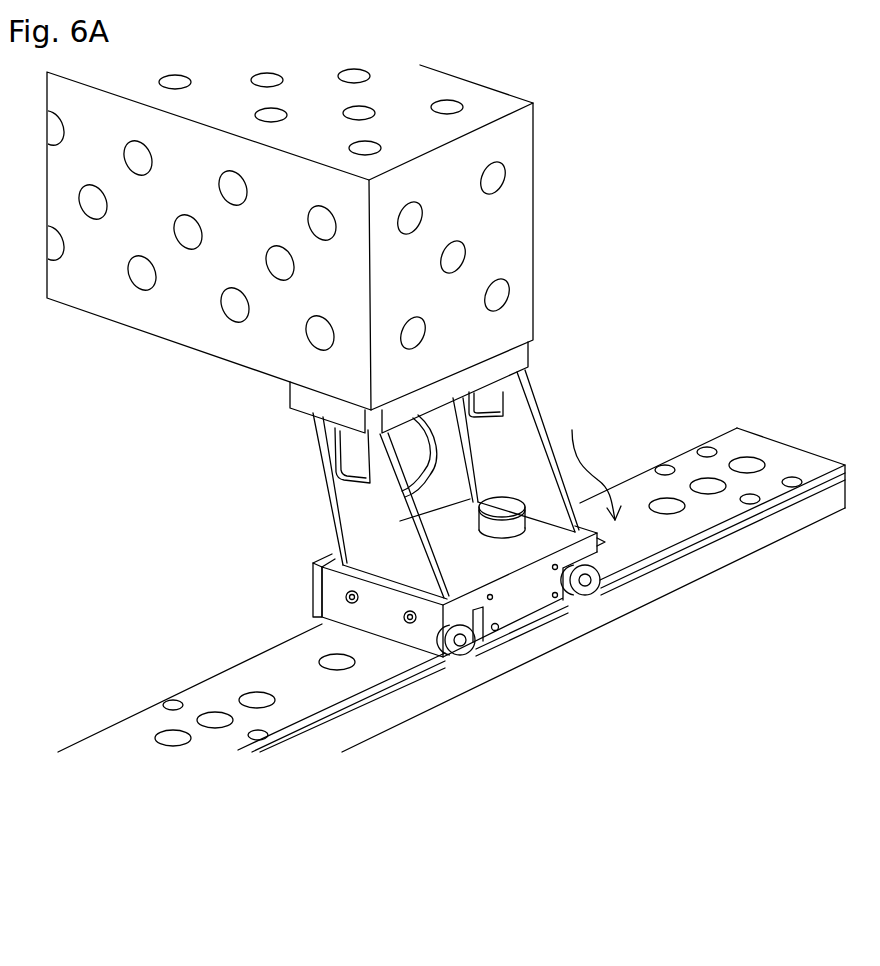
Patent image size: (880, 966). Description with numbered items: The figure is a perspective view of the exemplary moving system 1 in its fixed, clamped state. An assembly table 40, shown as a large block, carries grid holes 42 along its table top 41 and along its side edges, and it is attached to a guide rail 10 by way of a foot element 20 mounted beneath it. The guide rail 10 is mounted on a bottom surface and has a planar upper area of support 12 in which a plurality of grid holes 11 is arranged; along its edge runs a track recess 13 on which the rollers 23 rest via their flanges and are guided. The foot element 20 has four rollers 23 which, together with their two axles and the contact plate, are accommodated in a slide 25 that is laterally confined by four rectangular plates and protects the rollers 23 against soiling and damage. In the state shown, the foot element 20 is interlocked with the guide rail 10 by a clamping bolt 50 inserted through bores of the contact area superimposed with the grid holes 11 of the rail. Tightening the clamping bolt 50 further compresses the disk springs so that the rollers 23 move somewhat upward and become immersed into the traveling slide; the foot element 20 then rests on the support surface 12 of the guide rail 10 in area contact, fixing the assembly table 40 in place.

The gripper exchange system 1 is at (434, 951).
The guide rail 10 is at (800, 520).
The grid holes 11 is at (745, 463).
The upper area of support 12 is at (592, 464).
The track recess 13 is at (715, 530).
The foot element 20 is at (348, 507).
The rollers 23 is at (602, 587).
The slide 25 is at (315, 575).
The assembly table 40 is at (527, 233).
The table top 41 is at (497, 300).
The grid holes 42 is at (496, 181).
The clamping bolt 50 is at (505, 530).